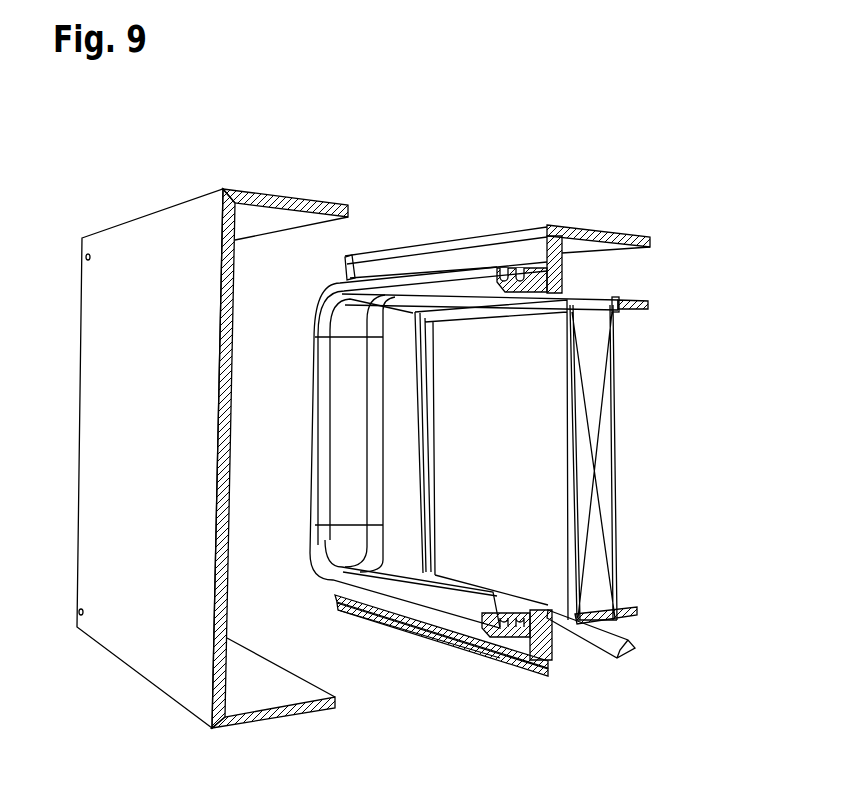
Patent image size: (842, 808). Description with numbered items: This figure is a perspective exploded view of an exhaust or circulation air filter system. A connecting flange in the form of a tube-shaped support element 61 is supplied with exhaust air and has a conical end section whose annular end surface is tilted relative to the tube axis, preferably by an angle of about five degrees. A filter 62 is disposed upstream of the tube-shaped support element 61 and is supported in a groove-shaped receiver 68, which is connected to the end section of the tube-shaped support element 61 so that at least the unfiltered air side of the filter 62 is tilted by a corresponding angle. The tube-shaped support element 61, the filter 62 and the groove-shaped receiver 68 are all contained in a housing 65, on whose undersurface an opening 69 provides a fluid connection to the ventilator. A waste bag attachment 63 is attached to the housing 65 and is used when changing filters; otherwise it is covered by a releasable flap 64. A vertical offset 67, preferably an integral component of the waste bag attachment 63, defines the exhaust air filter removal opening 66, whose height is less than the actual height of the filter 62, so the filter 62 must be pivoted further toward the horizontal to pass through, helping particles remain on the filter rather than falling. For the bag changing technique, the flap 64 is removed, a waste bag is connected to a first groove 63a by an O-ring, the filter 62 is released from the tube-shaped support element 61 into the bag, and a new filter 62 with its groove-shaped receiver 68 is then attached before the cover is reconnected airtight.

The tube-shaped support element 61 is at (650, 303).
The filter 62 is at (600, 528).
The waste bag attachment 63 is at (524, 660).
The first groove 63a is at (482, 660).
The releasable flap 64 is at (168, 645).
The housing 65 is at (610, 227).
The exhaust air filter removal opening 66 is at (522, 453).
The vertical offset 67 is at (557, 238).
The groove-shaped receiver 68 is at (562, 298).
The opening 69 is at (575, 652).